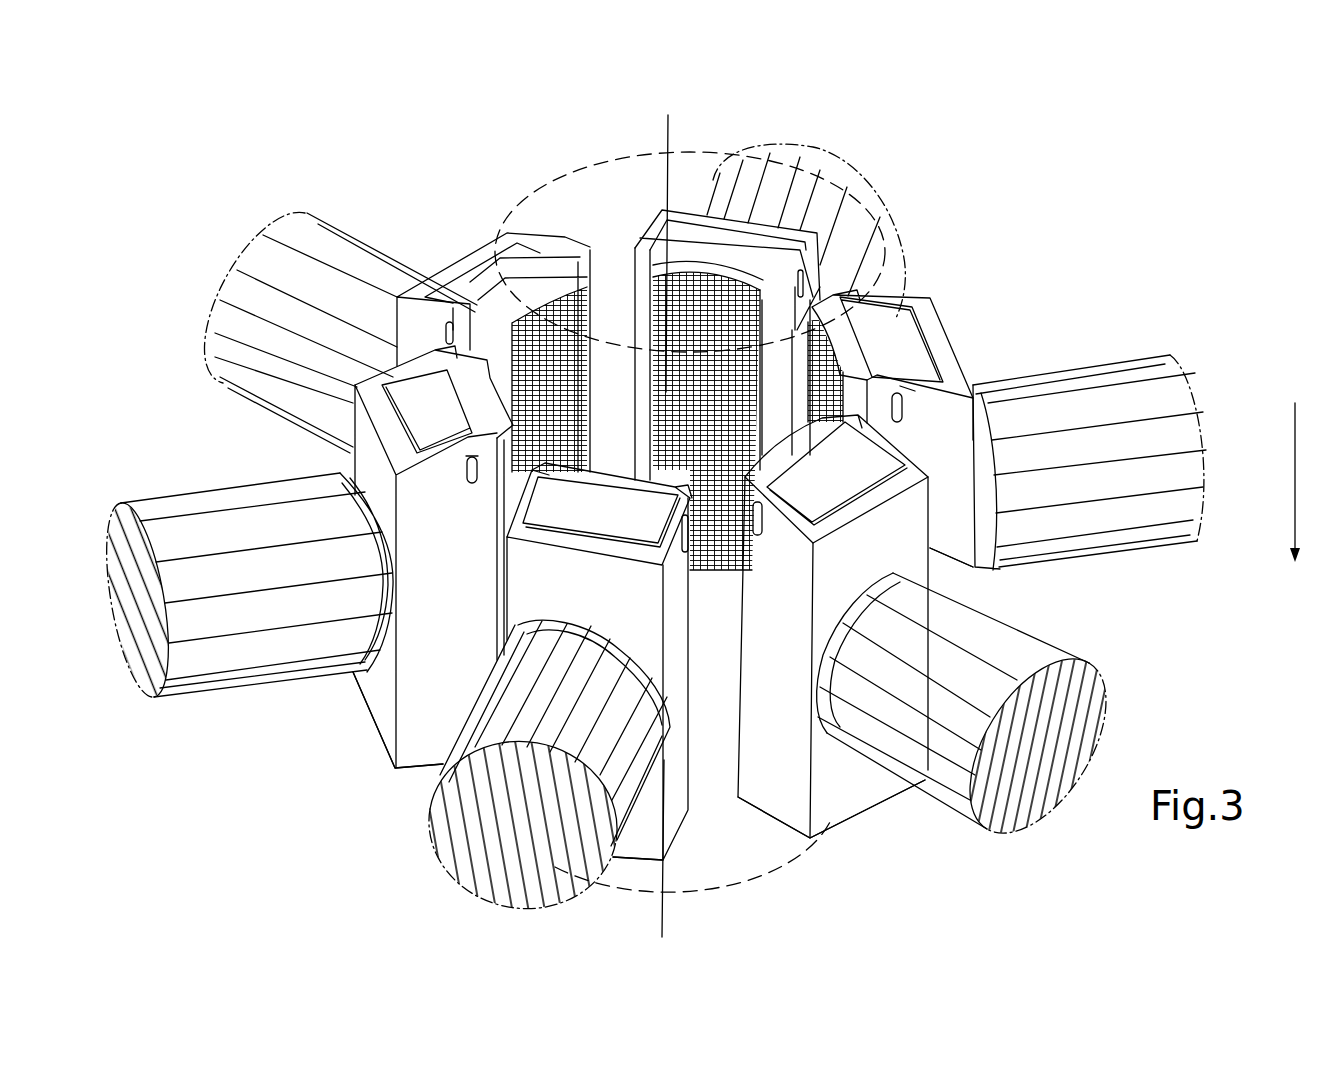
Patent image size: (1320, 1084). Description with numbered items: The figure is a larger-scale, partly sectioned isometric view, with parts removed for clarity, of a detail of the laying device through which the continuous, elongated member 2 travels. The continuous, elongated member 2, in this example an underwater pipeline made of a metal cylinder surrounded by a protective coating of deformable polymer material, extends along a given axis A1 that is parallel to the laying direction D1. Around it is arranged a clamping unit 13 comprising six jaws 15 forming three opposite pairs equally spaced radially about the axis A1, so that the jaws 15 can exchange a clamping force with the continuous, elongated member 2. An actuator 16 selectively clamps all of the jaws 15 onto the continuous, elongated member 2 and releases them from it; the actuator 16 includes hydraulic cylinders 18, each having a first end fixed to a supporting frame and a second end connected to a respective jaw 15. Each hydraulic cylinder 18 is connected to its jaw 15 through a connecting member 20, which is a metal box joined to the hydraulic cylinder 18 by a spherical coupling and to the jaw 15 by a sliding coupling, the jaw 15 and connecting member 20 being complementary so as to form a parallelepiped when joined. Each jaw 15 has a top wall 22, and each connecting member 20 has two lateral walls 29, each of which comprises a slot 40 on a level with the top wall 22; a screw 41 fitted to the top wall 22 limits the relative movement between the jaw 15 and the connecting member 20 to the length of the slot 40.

The continuous, elongated member 2 is at (688, 172).
The clamping unit 13 is at (1002, 155).
The jaw 15 is at (597, 257).
The actuator 16 is at (982, 213).
The hydraulic cylinder 18 is at (233, 337).
The connecting member 20 is at (835, 250).
The top wall 22 is at (477, 275).
The lateral wall 29 is at (407, 327).
The slot 40 is at (440, 338).
The screw 41 is at (472, 458).
The axis A1 is at (656, 150).
The laying direction D1 is at (1293, 483).